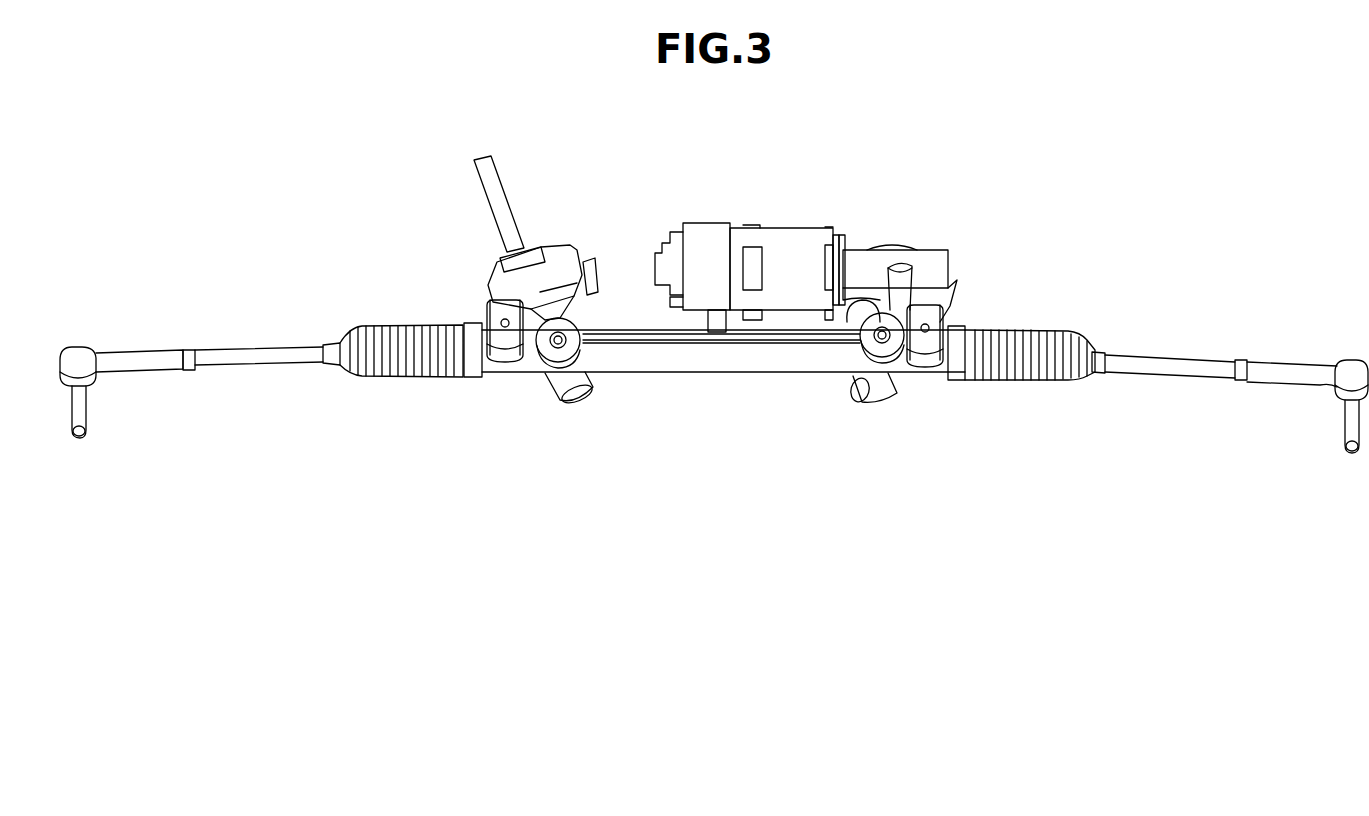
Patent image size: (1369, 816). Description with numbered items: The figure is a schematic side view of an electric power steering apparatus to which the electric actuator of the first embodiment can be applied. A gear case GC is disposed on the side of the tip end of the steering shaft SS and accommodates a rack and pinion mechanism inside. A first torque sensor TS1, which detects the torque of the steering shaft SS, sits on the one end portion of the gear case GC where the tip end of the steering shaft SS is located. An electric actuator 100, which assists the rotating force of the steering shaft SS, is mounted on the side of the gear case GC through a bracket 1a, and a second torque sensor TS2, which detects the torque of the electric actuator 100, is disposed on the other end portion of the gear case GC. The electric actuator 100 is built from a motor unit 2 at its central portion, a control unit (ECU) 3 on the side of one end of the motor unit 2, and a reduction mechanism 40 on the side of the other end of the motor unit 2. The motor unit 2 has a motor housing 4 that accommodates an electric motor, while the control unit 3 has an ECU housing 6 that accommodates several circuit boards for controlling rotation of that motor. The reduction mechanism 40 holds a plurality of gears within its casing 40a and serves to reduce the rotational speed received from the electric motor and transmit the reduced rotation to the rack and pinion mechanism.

The electric actuator 100 is at (803, 193).
The bracket 1a is at (716, 320).
The motor unit 2 is at (771, 223).
The control unit (ECU) 3 is at (698, 224).
The motor housing 4 is at (810, 243).
The ECU housing 6 is at (722, 233).
The reduction mechanism 40 is at (943, 244).
The casing 40a is at (940, 262).
The steering shaft SS is at (488, 186).
The first torque sensor TS1 is at (505, 332).
The second torque sensor TS2 is at (940, 328).
The gear case GC is at (700, 376).